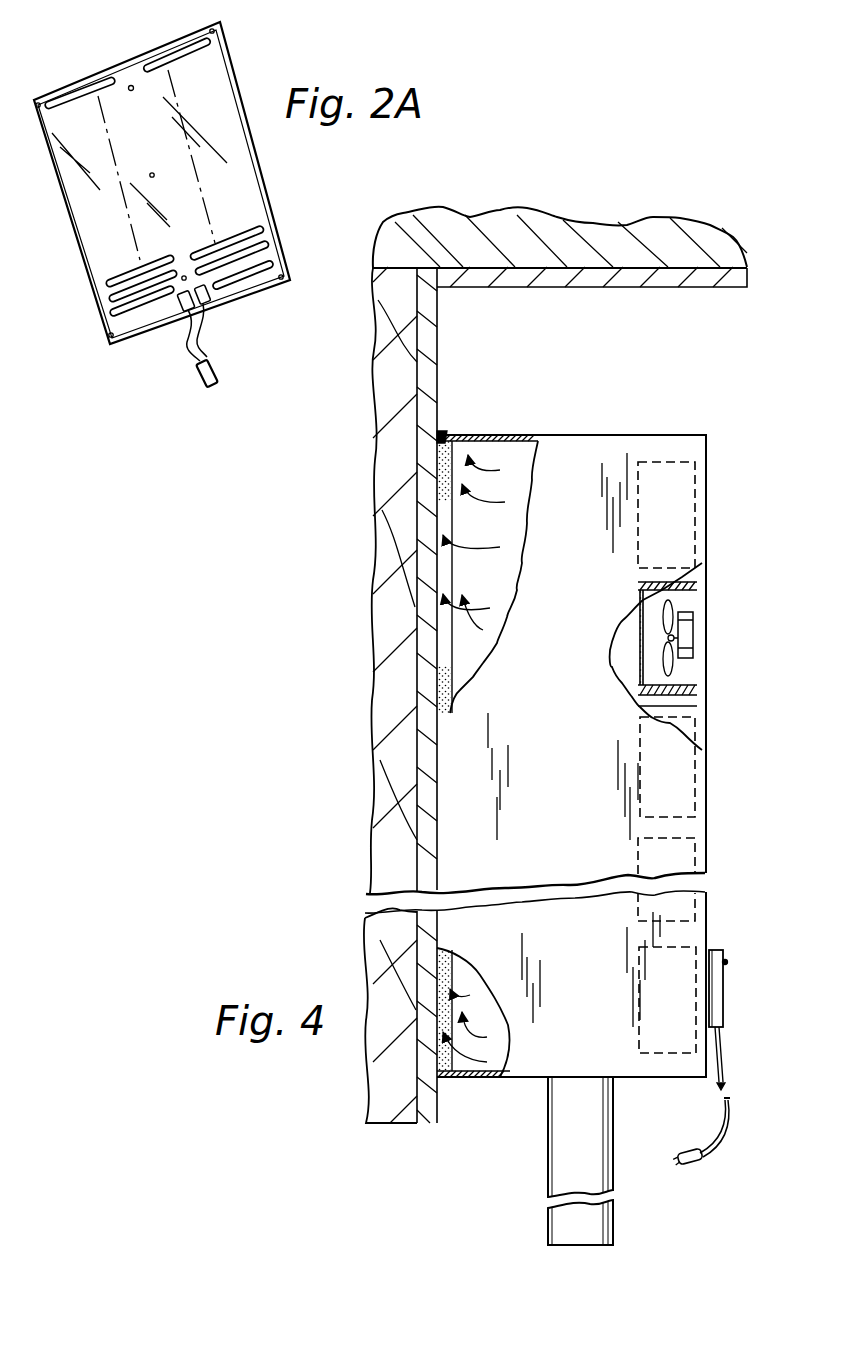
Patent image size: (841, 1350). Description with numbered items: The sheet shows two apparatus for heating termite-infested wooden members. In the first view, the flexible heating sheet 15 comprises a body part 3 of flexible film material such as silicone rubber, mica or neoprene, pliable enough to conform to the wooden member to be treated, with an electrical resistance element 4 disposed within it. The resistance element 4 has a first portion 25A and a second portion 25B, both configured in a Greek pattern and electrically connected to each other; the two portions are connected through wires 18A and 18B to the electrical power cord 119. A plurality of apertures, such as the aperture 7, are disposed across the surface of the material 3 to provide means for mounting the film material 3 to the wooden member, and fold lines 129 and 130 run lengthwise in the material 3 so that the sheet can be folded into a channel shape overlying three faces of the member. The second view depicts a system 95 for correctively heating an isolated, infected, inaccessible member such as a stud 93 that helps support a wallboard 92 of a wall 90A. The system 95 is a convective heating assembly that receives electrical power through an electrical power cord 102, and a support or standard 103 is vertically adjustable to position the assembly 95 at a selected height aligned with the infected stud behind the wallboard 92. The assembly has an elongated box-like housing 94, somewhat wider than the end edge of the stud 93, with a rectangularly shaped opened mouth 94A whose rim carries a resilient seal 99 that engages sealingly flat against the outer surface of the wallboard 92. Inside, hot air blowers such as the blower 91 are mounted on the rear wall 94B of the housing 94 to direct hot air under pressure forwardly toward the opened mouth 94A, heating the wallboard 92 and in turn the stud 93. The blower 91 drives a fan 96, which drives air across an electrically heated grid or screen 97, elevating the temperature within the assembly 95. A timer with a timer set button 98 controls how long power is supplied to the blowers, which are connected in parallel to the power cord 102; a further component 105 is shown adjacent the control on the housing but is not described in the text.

In FIG. 2A, the flexible heating sheet 15 is at (160, 36).
In FIG. 2A, the fold line 129 is at (86, 113).
In FIG. 2A, the aperture 7 is at (130, 86).
In FIG. 2A, the fold line 130 is at (171, 92).
In FIG. 2A, the first portion 25A is at (124, 258).
In FIG. 2A, the second portion 25B is at (251, 219).
In FIG. 2A, the body part 3 is at (87, 278).
In FIG. 2A, the electrical resistance element 4 is at (108, 286).
In FIG. 2A, the wire 18A is at (189, 346).
In FIG. 2A, the wire 18B is at (204, 342).
In FIG. 2A, the electrical power cord 119 is at (217, 381).
In FIG. 4, the stud 93 is at (376, 330).
In FIG. 4, the wallboard 92 is at (441, 319).
In FIG. 4, the wall 90A is at (442, 366).
In FIG. 4, the resilient seal 99 is at (449, 430).
In FIG. 4, the system 95 is at (713, 527).
In FIG. 4, the electrically heated grid or screen 97 is at (640, 612).
In FIG. 4, the fan 96 is at (692, 615).
In FIG. 4, the blower 91 is at (693, 640).
In FIG. 4, the opened mouth 94A is at (467, 668).
In FIG. 4, the rear wall 94B is at (704, 730).
In FIG. 4, the housing 94 is at (708, 790).
In FIG. 4, the timer set button 98 is at (727, 962).
In FIG. 4, the switch 105 is at (725, 1006).
In FIG. 4, the electrical power cord 102 is at (728, 1078).
In FIG. 4, the support or standard 103 is at (558, 1139).